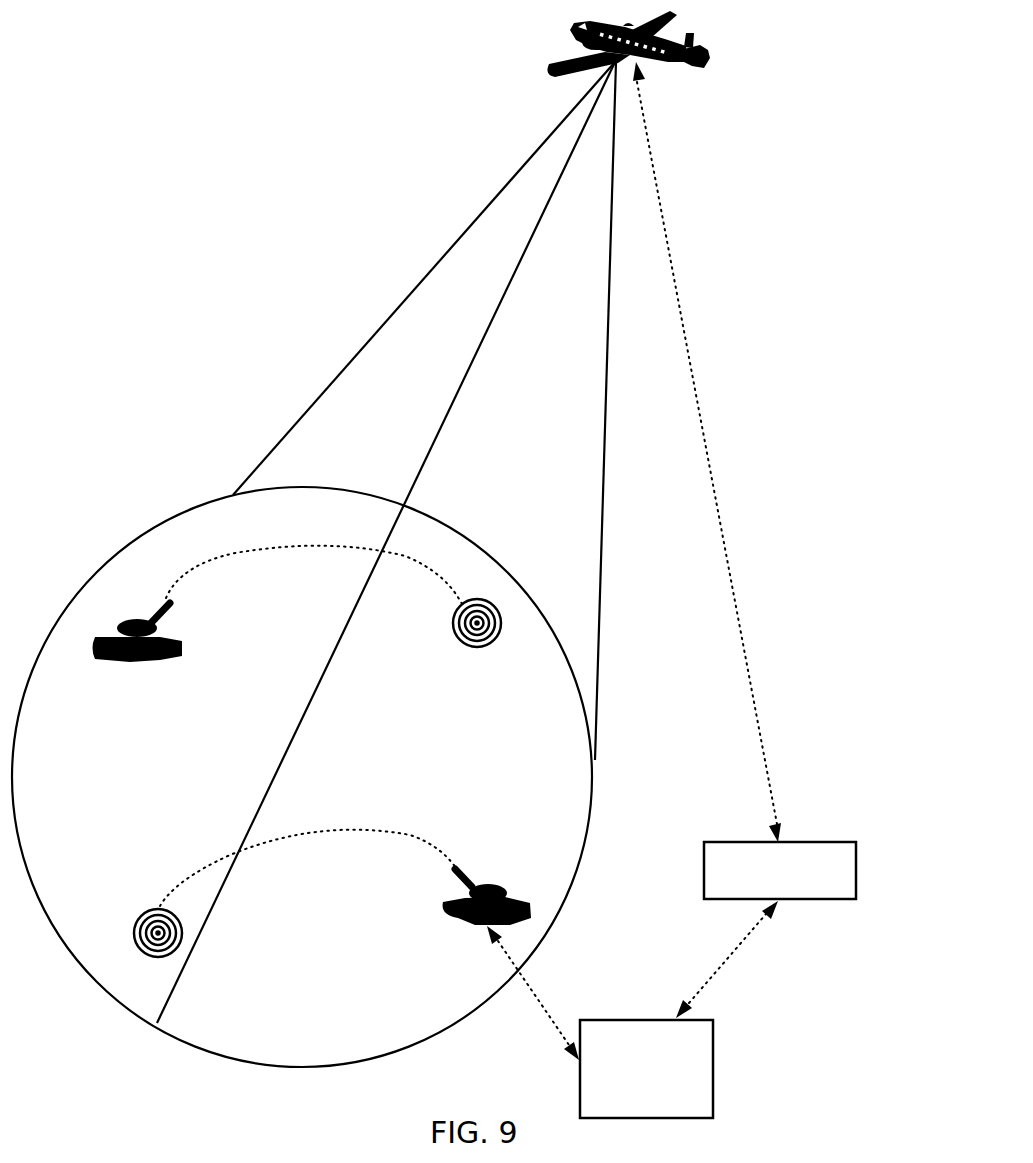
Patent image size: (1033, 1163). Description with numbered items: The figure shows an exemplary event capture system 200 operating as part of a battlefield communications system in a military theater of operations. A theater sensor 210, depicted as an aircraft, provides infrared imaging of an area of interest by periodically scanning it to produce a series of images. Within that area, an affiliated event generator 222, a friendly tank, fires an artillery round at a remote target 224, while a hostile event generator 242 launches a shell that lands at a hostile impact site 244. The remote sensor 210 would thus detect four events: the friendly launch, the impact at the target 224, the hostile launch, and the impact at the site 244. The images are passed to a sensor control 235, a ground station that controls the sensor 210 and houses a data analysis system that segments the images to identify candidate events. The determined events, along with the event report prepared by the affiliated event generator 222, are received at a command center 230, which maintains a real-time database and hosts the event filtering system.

The event capture system 200 is at (772, 276).
The theater sensor 210 is at (549, 62).
The affiliated event generator 222 is at (452, 912).
The remote target 224 is at (144, 910).
The command center 230 is at (636, 1020).
The sensor control 235 is at (745, 842).
The hostile event generator 242 is at (130, 664).
The hostile impact site 244 is at (462, 645).